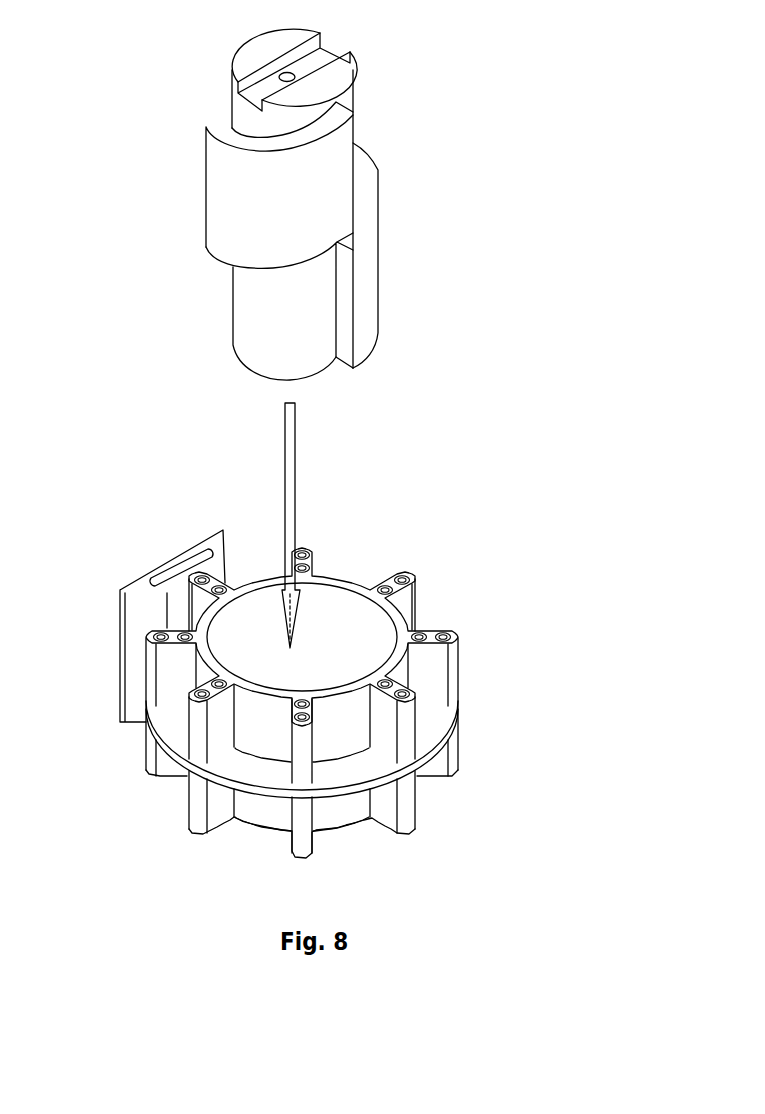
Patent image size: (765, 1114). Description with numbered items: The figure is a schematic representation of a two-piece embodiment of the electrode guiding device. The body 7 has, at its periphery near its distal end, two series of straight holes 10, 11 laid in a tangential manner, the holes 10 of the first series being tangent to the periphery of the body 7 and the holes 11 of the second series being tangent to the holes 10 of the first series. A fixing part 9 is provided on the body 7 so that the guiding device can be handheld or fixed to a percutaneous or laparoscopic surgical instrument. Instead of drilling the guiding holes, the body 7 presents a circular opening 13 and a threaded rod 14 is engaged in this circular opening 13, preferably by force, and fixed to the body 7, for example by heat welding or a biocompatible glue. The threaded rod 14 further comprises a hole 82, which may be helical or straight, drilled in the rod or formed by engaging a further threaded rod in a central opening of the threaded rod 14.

The body 7 is at (175, 718).
The fixing part 9 is at (135, 592).
The straight holes of the first series 10 is at (403, 568).
The straight holes of the second series 11 is at (423, 627).
The circular opening 13 is at (347, 638).
The threaded rod 14 is at (240, 185).
The hole 82 is at (302, 83).